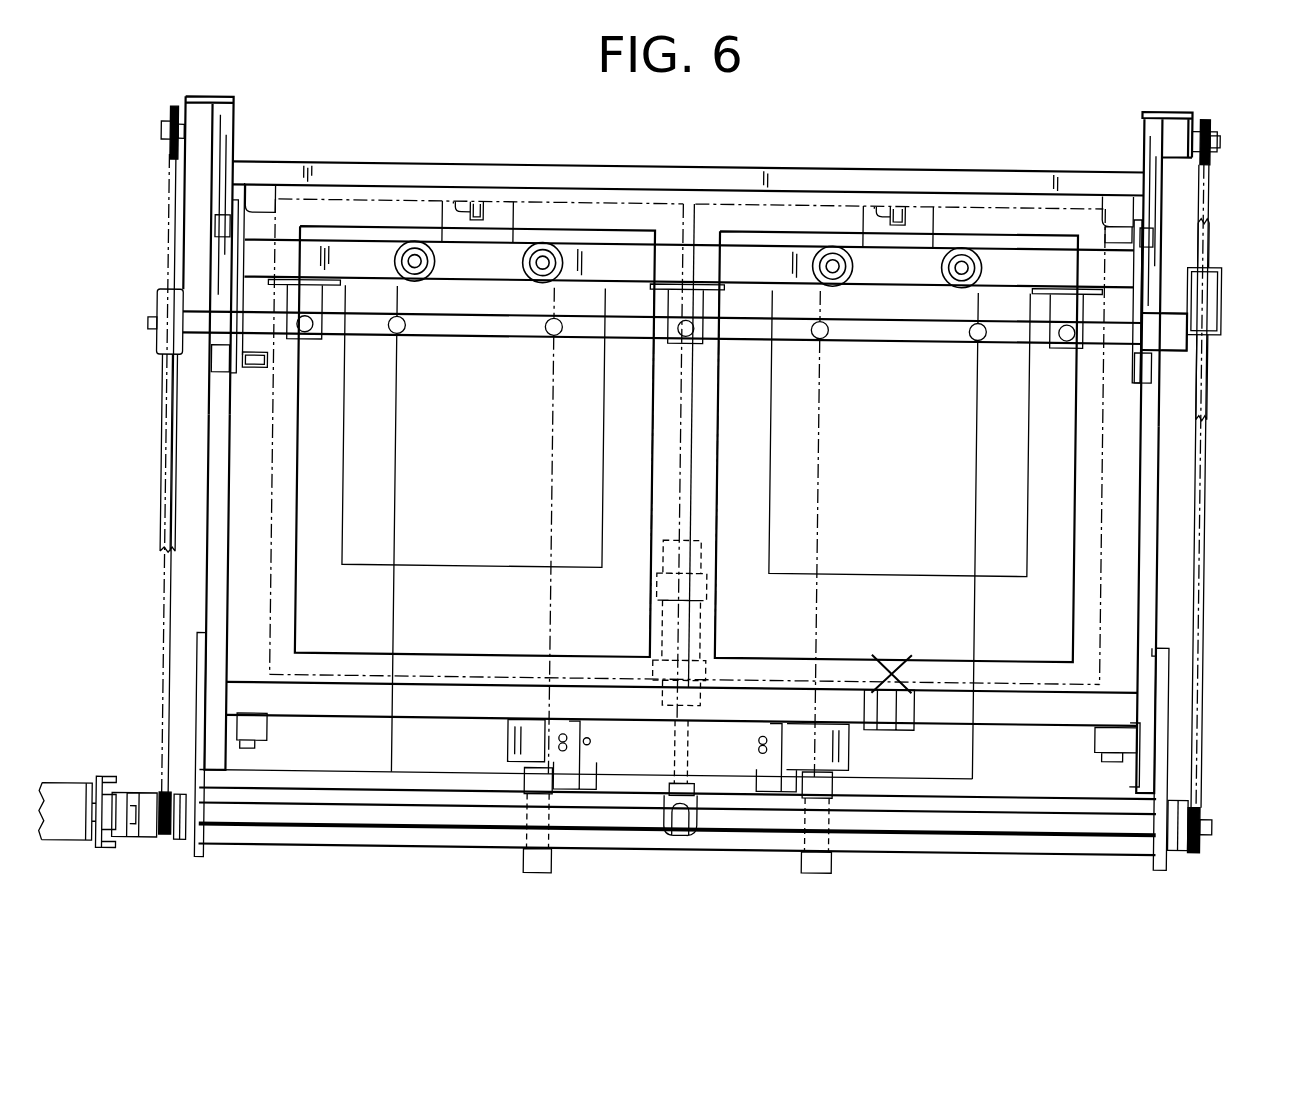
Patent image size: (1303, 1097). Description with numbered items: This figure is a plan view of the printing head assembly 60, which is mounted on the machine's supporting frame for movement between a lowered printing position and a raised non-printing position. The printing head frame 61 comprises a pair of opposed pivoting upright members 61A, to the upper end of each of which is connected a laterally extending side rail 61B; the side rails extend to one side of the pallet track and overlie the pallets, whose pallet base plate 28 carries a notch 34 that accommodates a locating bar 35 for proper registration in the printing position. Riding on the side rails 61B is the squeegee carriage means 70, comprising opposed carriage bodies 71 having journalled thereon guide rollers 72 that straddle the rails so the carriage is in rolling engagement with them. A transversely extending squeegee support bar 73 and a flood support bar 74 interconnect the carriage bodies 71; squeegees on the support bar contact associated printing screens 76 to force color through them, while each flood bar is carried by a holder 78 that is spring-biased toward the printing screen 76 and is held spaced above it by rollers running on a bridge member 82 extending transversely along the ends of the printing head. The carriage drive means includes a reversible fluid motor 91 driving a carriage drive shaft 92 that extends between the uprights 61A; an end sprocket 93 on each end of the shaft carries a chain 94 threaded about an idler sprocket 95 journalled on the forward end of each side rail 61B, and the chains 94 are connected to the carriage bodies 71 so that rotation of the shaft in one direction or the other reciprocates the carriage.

The pallet base plate 28 is at (822, 601).
The notch 34 is at (455, 213).
The locating bar 35 is at (478, 208).
The printing head assembly 60 is at (1228, 440).
The printing head frame 61 is at (1165, 476).
The upright member 61A is at (204, 861).
The side rail 61B is at (213, 584).
The squeegee carriage means 70 is at (1147, 262).
The carriage body 71 is at (232, 310).
The guide roller 72 is at (209, 236).
The squeegee support bar 73 is at (354, 263).
The flood support bar 74 is at (503, 337).
The printing screen 76 is at (552, 576).
The holder 78 is at (391, 322).
The bridge member 82 is at (170, 457).
The reversible fluid motor 91 is at (76, 804).
The carriage drive shaft 92 is at (283, 825).
The end sprocket 93 is at (167, 803).
The chain 94 is at (167, 646).
The idler sprocket 95 is at (174, 156).